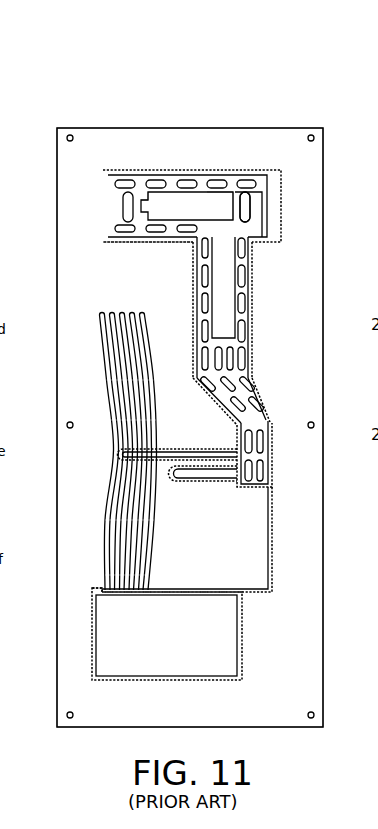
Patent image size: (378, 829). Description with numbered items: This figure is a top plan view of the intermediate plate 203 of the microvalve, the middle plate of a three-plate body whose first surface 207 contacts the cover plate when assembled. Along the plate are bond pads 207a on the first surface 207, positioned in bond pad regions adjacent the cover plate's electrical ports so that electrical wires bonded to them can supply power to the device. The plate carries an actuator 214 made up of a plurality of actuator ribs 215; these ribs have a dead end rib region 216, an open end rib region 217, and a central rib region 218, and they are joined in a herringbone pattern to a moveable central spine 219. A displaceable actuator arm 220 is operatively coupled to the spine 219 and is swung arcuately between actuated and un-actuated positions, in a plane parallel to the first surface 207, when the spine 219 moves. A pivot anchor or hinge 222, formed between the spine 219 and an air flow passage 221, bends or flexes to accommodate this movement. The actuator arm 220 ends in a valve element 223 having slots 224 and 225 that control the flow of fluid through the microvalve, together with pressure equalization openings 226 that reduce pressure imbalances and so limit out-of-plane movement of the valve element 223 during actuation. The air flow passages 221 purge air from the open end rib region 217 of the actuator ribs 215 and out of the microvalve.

The intermediate plate 203 is at (118, 54).
The first surface 207 is at (290, 128).
The bond pads 207a is at (128, 278).
The valve element 223 is at (115, 203).
The slot 224 is at (167, 185).
The slot 225 is at (212, 188).
The pressure equalization openings 226 is at (257, 378).
The actuator arm 220 is at (233, 373).
The central spine 219 is at (203, 448).
The central rib region 218 is at (96, 451).
The hinge 222 is at (200, 478).
The air flow passages 221 is at (223, 596).
The dead end rib region 216 is at (90, 321).
The actuator ribs 215 is at (148, 412).
The actuator 214 is at (89, 419).
The open end rib region 217 is at (86, 582).